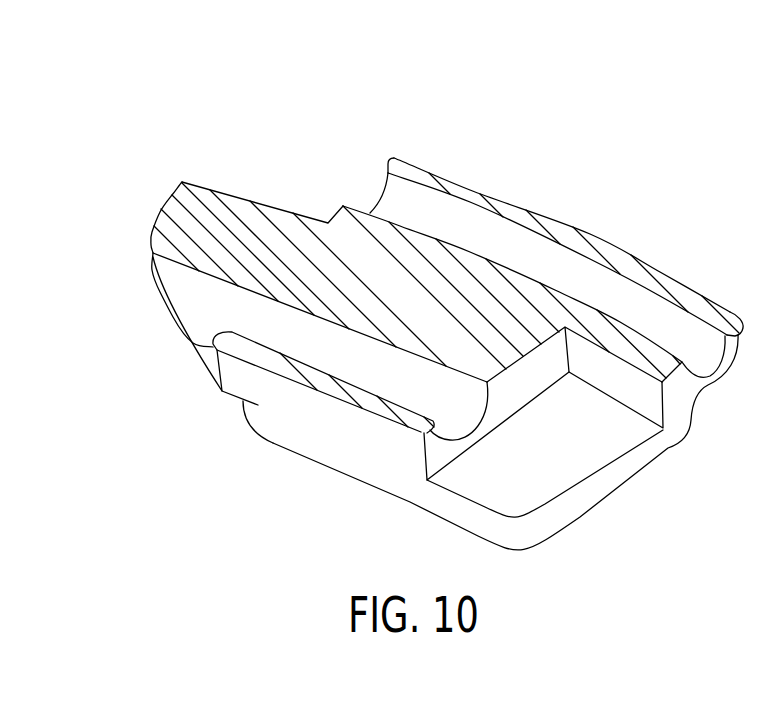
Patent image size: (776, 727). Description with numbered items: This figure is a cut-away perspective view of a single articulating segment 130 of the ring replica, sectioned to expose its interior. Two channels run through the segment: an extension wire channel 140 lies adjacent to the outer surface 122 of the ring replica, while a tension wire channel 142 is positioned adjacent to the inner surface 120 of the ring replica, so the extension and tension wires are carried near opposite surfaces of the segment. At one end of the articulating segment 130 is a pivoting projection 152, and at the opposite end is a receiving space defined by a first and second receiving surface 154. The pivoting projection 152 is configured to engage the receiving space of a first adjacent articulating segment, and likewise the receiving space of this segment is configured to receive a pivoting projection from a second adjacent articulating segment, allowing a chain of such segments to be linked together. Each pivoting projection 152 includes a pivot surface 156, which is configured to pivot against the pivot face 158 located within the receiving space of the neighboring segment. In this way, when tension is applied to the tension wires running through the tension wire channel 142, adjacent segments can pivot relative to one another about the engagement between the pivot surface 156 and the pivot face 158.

The articulating segment 130 is at (448, 88).
The pivoting projection 152 is at (182, 196).
The extension wire channel 140 is at (555, 269).
The tension wire channel 142 is at (362, 363).
The outer surface 122 is at (577, 226).
The inner surface 120 is at (355, 443).
The receiving surface 154 is at (560, 457).
The pivot face 158 is at (532, 377).
The pivot surface 156 is at (153, 258).